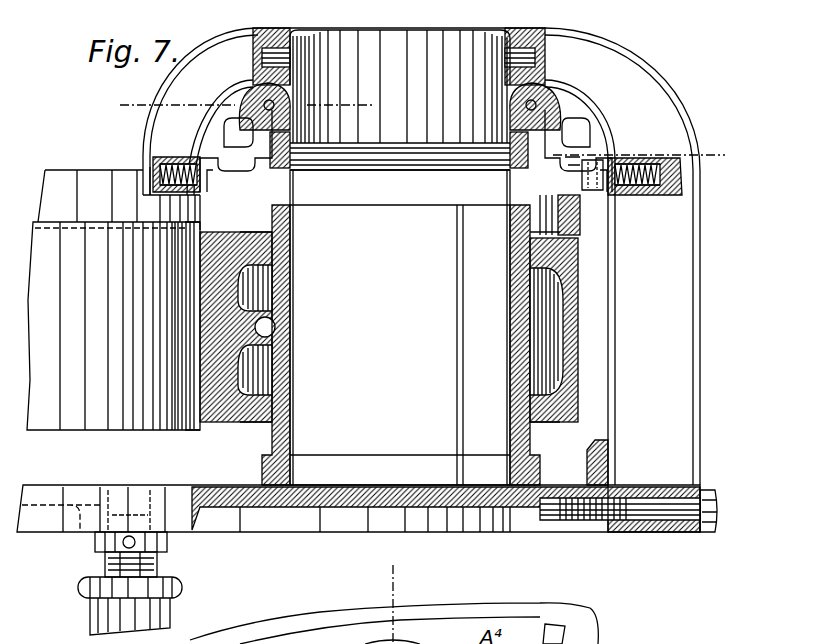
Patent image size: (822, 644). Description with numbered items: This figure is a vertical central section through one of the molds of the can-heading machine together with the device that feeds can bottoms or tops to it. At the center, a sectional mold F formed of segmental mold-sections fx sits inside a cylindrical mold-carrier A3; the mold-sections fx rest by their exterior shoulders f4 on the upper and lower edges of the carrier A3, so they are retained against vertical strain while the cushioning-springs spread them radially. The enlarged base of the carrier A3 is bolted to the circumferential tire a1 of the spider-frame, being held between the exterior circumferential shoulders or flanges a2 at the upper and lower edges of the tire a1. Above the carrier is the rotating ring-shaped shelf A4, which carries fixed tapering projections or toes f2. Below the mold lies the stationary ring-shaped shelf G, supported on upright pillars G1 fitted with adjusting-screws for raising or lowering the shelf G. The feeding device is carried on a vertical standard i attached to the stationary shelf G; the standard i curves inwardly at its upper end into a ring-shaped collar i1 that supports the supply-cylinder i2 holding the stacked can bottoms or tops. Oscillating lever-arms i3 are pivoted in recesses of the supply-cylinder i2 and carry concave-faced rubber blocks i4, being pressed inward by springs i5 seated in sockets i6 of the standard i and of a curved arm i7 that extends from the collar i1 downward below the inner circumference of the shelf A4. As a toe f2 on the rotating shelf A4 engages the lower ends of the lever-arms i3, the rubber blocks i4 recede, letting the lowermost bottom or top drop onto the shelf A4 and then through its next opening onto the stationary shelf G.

The vertical standard i is at (575, 165).
The ring-shaped collar i1 is at (398, 44).
The supply-cylinder i2 is at (400, 100).
The oscillating lever-arms i3 is at (406, 137).
The rubber blocks i4 is at (288, 170).
The springs i5 is at (178, 165).
The sockets i6 is at (645, 165).
The curved arm i7 is at (400, 137).
The tapering projections or toes f2 is at (603, 153).
The exterior shoulders f4 is at (282, 230).
The segmental mold-sections fx is at (406, 345).
The sectional mold F is at (400, 327).
The cylindrical mold-carrier A3 is at (402, 327).
The ring-shaped shelf A4 is at (47, 200).
The circumferential tire a1 is at (113, 326).
The circumferential shoulders or flanges a2 is at (198, 228).
The stationary ring-shaped shelf G is at (367, 526).
The upright pillars G1 is at (150, 612).